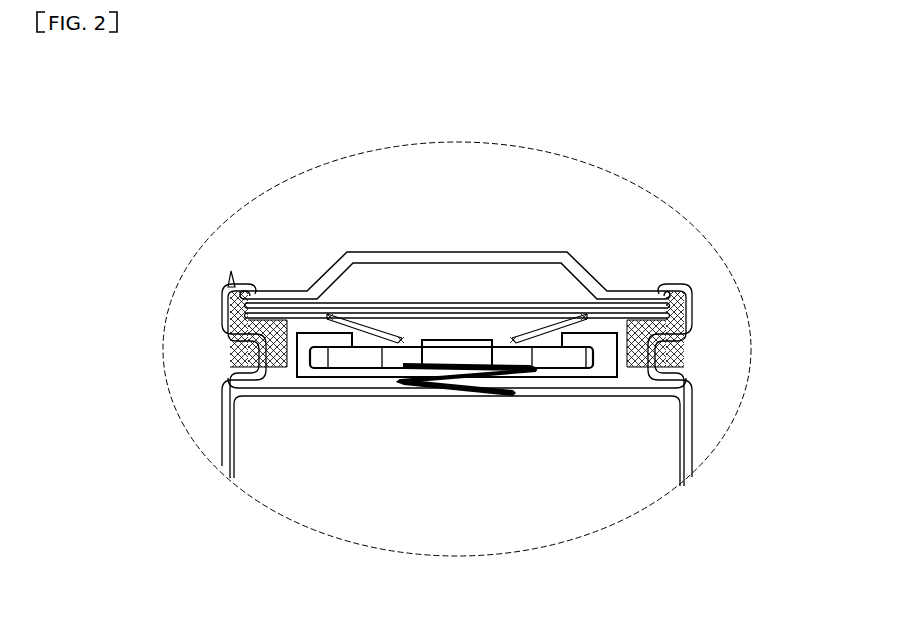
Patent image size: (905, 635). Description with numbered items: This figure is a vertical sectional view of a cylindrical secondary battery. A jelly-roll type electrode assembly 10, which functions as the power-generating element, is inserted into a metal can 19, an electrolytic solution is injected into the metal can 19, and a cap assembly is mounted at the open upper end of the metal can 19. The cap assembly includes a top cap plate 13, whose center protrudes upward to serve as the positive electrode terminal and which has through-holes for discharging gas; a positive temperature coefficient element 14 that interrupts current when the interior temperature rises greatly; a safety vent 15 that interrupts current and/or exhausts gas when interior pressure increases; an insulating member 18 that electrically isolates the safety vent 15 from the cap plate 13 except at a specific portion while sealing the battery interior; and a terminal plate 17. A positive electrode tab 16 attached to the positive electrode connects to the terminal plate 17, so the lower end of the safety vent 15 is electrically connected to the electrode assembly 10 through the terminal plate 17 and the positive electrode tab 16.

The electrode assembly 10 is at (640, 465).
The top cap plate 13 is at (463, 250).
The positive temperature coefficient (PTC) element 14 is at (553, 298).
The safety vent 15 is at (360, 320).
The positive electrode tab 16 is at (447, 370).
The terminal plate 17 is at (390, 357).
The insulating member 18 is at (223, 290).
The metal can 19 is at (697, 283).